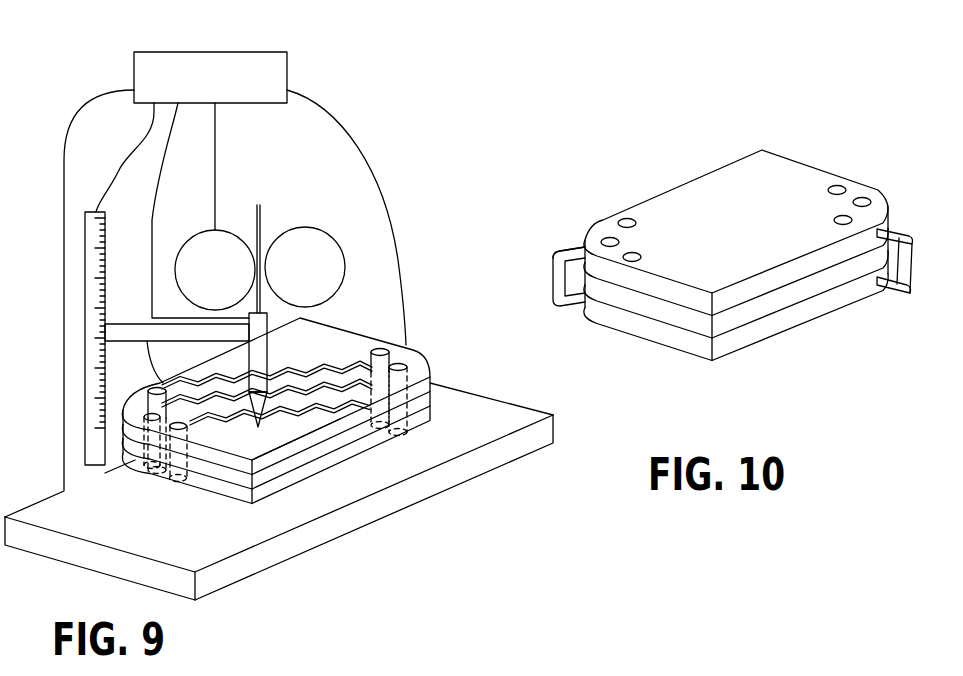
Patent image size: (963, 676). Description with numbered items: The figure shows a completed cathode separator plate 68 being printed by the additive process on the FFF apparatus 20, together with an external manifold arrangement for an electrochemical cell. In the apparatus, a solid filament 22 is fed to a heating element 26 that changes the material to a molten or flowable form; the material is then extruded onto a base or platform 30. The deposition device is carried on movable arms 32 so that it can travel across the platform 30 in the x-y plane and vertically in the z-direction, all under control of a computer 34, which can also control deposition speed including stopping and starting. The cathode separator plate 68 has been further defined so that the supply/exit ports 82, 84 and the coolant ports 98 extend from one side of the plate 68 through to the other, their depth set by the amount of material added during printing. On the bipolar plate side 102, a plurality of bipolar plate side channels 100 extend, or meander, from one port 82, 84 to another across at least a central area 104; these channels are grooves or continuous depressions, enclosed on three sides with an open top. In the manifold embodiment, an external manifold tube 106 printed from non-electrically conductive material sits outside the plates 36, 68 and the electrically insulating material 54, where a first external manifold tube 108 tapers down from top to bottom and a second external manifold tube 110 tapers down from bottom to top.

In FIG. 9, the FFF apparatus 20 is at (414, 98).
In FIG. 9, the solid filament 22 is at (259, 205).
In FIG. 9, the heating element 26 is at (256, 333).
In FIG. 9, the platform 30 is at (510, 415).
In FIG. 9, the movable arms 32 is at (85, 268).
In FIG. 9, the computer 34 is at (253, 52).
In FIG. 9, the anode separator plate 36 is at (420, 418).
In FIG. 10, the anode separator plate 36 is at (676, 340).
In FIG. 9, the electrically insulating material 54 is at (292, 462).
In FIG. 10, the electrically insulating material 54 is at (690, 322).
In FIG. 9, the cathode separator plate 68 is at (413, 362).
In FIG. 10, the cathode separator plate 68 is at (651, 287).
In FIG. 9, the supply/exit port 82 is at (148, 400).
In FIG. 9, the supply/exit port 84 is at (173, 478).
In FIG. 9, the coolant ports 98 is at (143, 420).
In FIG. 9, the bipolar plate side channels 100 is at (345, 385).
In FIG. 9, the bipolar plate side 102 is at (248, 442).
In FIG. 9, the central area 104 is at (299, 347).
In FIG. 10, the external manifold tube 106 is at (567, 248).
In FIG. 10, the first external manifold tube 108 is at (910, 262).
In FIG. 10, the second external manifold tube 110 is at (553, 265).